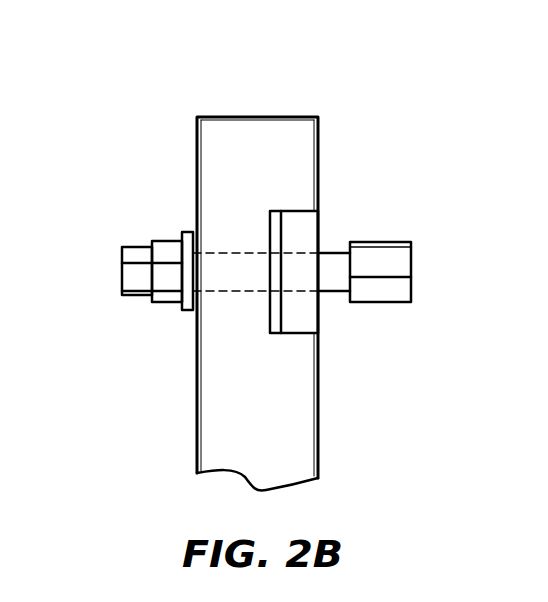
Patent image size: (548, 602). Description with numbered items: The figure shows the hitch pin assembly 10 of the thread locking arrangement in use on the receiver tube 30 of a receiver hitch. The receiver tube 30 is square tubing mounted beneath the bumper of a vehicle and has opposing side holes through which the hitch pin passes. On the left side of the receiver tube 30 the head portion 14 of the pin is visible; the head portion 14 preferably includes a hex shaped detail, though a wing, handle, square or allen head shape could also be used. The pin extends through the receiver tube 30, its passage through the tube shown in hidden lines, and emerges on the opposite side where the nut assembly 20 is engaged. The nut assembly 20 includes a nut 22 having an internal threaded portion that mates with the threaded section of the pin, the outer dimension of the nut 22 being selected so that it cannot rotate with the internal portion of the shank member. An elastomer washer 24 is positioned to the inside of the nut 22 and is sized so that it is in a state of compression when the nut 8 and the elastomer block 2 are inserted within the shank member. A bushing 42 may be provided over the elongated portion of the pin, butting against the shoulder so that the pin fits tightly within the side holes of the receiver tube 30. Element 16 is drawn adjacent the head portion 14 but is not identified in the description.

The hitch pin assembly 10 is at (185, 62).
The receiver tube 30 is at (245, 132).
The nut 8 is at (300, 237).
The elastomer block 2 is at (322, 273).
The nut 22 is at (182, 240).
The head portion 14 is at (121, 255).
The nut / washer 16 is at (165, 291).
The elastomer washer 24 is at (190, 312).
The nut assembly 20 is at (424, 270).
The bushing 42 is at (380, 290).